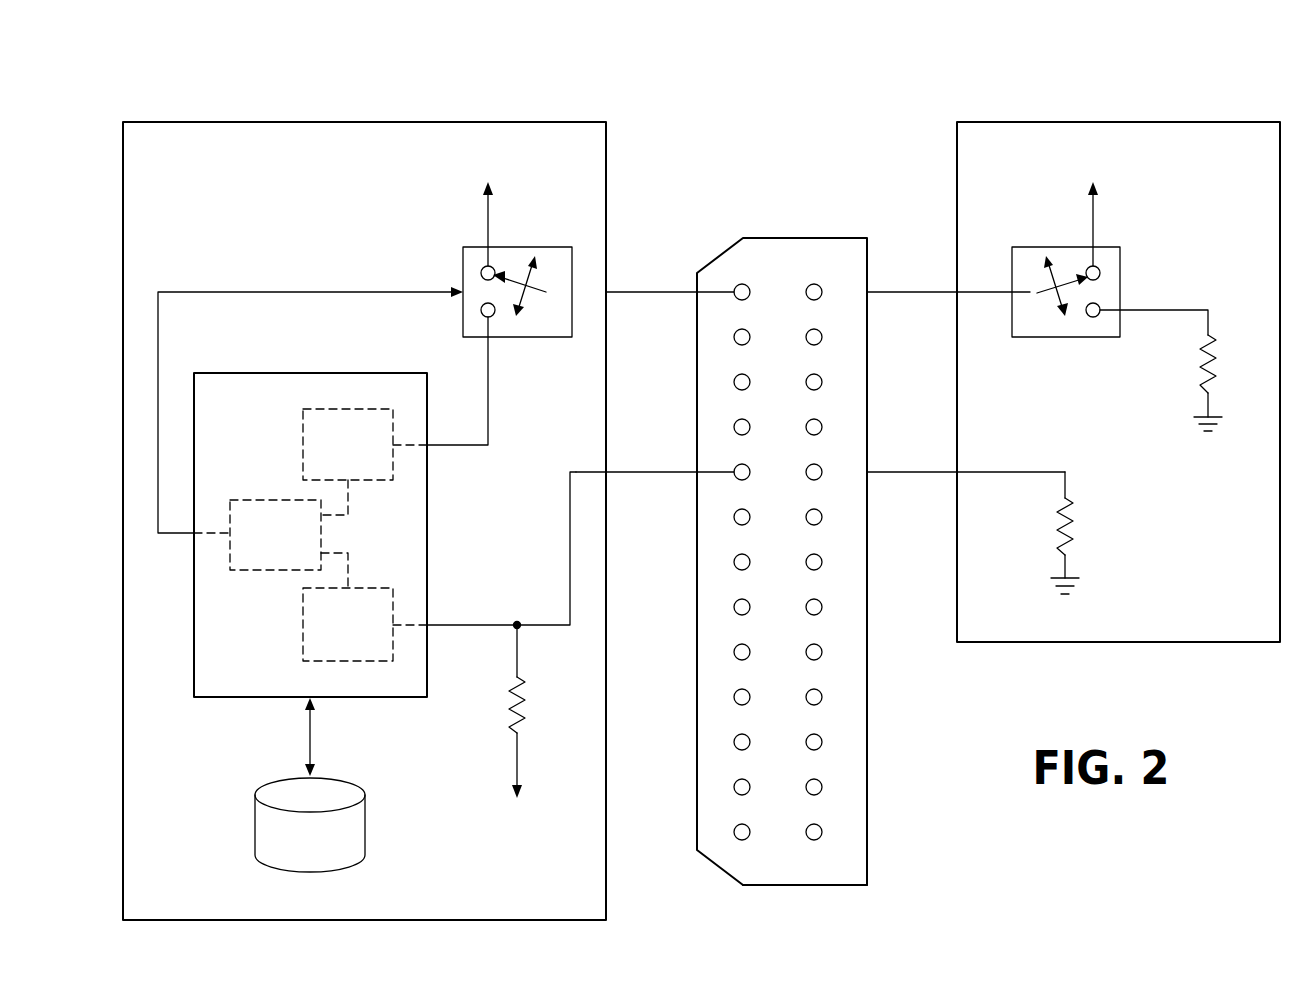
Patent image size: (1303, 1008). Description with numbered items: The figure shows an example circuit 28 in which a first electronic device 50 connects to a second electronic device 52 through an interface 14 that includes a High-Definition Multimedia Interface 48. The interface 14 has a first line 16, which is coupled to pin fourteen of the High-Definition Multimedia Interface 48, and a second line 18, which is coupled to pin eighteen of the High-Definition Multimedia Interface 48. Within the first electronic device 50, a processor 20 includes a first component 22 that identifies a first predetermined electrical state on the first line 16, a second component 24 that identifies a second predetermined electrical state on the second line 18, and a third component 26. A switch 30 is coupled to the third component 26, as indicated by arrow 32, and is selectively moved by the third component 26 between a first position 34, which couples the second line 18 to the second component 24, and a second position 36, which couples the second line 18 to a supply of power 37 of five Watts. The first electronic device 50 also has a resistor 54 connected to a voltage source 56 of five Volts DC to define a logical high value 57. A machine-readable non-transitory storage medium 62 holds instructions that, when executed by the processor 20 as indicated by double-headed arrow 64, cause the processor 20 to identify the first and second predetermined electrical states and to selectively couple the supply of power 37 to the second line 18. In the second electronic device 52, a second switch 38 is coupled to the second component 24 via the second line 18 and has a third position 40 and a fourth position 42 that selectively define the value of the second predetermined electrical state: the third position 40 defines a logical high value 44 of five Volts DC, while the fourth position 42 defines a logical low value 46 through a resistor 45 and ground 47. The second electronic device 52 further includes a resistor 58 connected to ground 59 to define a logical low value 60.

The interface 14 is at (801, 237).
The first line 16 is at (653, 471).
The second line 18 is at (653, 291).
The processor 20 is at (313, 372).
The first component 22 is at (336, 637).
The second component 24 is at (336, 457).
The third component 26 is at (263, 547).
The circuit 28 is at (844, 72).
The switch 30 is at (543, 246).
The arrow 32 is at (250, 291).
The first position 34 is at (481, 311).
The second position 36 is at (481, 273).
The supply of power 37 is at (486, 218).
The second switch 38 is at (1035, 246).
The third position 40 is at (1101, 273).
The fourth position 42 is at (1093, 318).
The logical high value 44 is at (1095, 218).
The resistor 45 is at (1200, 365).
The logical low value 46 is at (1209, 320).
The ground 47 is at (1195, 430).
The High-Definition Multimedia Interface 48 is at (823, 886).
The first electronic device 50 is at (366, 121).
The second electronic device 52 is at (1103, 121).
The resistor 54 is at (509, 706).
The voltage source 56 is at (516, 759).
The logical high value 57 is at (516, 652).
The resistor 58 is at (1055, 527).
The ground 59 is at (1053, 592).
The logical low value 60 is at (1068, 483).
The machine-readable non-transitory storage medium 62 is at (298, 857).
The double-headed arrow 64 is at (308, 742).